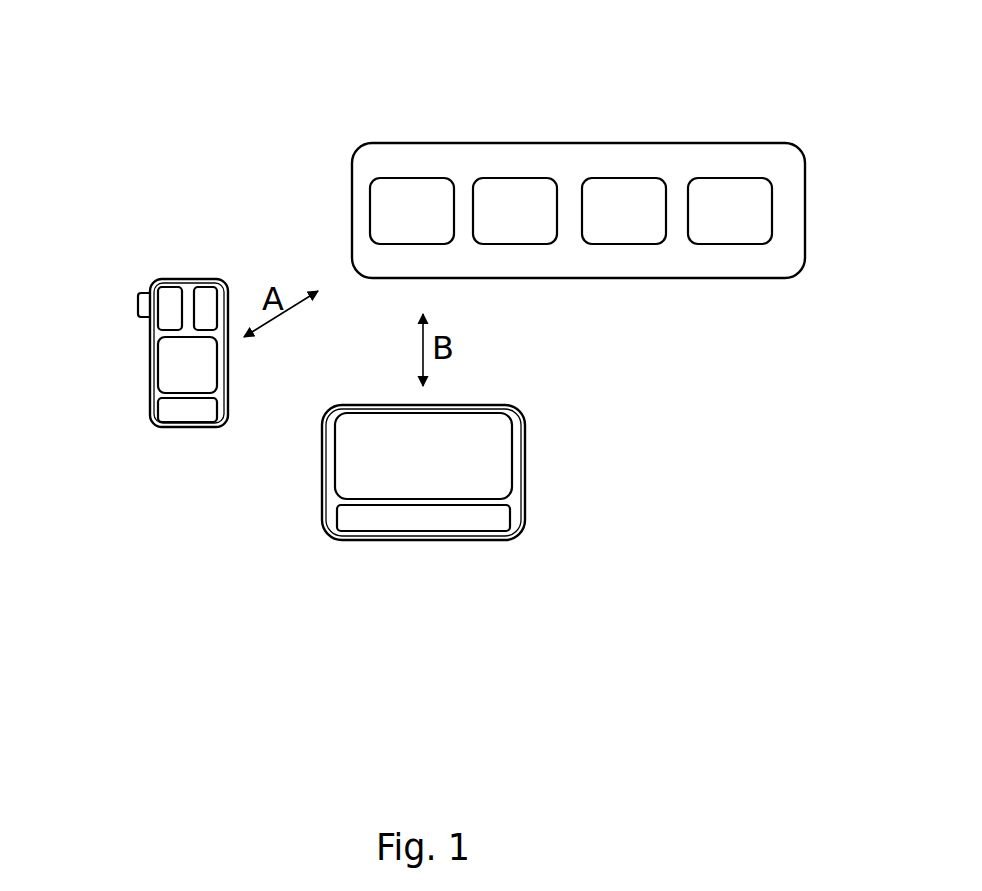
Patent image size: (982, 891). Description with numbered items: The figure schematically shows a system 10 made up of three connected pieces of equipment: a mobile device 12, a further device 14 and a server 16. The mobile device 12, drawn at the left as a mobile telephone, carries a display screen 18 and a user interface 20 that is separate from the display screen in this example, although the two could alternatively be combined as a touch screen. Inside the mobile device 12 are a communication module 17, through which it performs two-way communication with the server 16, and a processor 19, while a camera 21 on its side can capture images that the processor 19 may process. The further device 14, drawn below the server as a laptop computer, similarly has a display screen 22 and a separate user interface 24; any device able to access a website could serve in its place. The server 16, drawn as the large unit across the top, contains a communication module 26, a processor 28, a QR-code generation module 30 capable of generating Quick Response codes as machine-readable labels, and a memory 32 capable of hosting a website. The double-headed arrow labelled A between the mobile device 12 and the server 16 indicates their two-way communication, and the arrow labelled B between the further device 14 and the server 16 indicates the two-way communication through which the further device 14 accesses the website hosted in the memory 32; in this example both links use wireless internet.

The system 10 is at (222, 148).
The mobile device 12 is at (148, 393).
The further device 14 is at (322, 485).
The server 16 is at (773, 143).
The communication module 17 is at (202, 287).
The display screen 18 is at (157, 360).
The processor 19 is at (170, 287).
The user interface 20 is at (188, 422).
The camera 21 is at (138, 305).
The display screen 22 is at (513, 443).
The user interface 24 is at (508, 520).
The communication module 26 is at (410, 177).
The processor 28 is at (506, 177).
The QR-code generation module 30 is at (598, 177).
The memory 32 is at (708, 177).